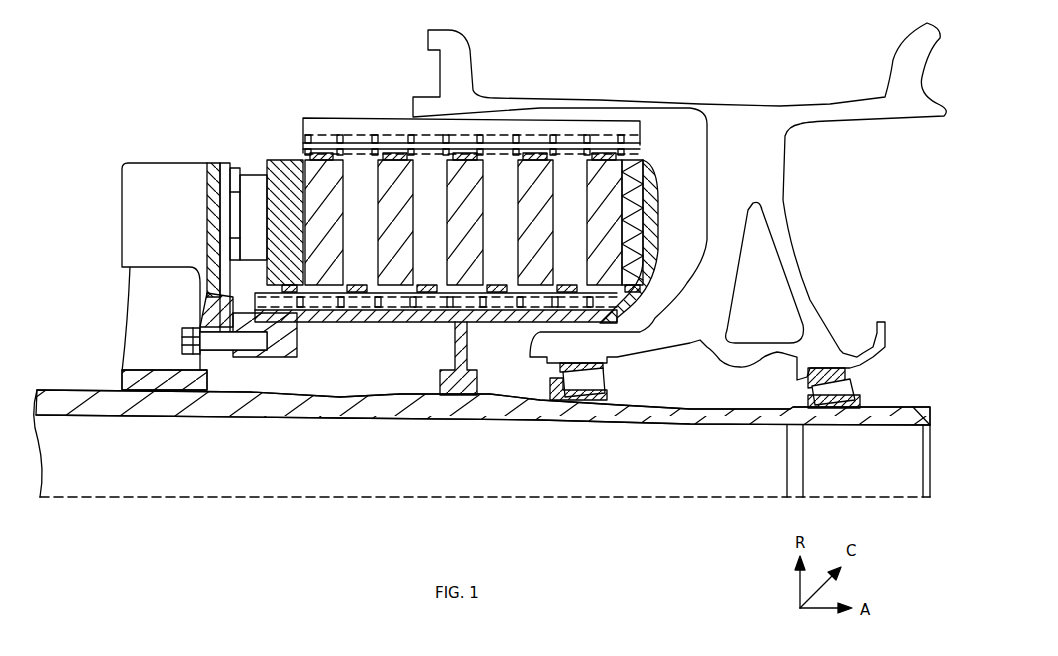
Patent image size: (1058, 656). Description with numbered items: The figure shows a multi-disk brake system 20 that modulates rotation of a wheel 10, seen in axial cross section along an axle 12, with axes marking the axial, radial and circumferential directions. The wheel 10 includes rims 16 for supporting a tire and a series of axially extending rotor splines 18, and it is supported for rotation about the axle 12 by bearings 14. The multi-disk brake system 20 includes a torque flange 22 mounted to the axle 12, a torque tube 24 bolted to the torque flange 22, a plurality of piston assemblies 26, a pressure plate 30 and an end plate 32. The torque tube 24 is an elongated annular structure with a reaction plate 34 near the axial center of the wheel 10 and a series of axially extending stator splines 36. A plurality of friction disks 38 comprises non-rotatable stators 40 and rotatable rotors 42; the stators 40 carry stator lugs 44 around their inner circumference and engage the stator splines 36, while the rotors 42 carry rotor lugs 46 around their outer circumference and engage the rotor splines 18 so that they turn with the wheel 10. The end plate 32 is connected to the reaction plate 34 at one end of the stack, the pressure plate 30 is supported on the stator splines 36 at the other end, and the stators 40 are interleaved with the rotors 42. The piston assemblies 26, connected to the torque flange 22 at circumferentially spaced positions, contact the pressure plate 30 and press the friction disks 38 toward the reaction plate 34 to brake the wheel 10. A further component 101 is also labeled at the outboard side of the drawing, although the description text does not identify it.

The wheel 10 is at (739, 165).
The axle 12 is at (722, 412).
The bearings 14 is at (598, 380).
The rims 16 is at (465, 40).
The rotor splines 18 is at (402, 118).
The multi-disk brake system 20 is at (212, 82).
The torque flange 22 is at (210, 311).
The torque tube 24 is at (325, 332).
The piston assemblies 26 is at (204, 154).
The pressure plate 30 is at (283, 165).
The end plate 32 is at (632, 170).
The reaction plate 34 is at (655, 217).
The stator splines 36 is at (262, 300).
The friction disks 38 is at (296, 148).
The stator 40 is at (577, 170).
The rotor 42 is at (328, 175).
The stator lugs 44 is at (522, 297).
The rotor lugs 46 is at (375, 138).
The hub 101 is at (135, 170).